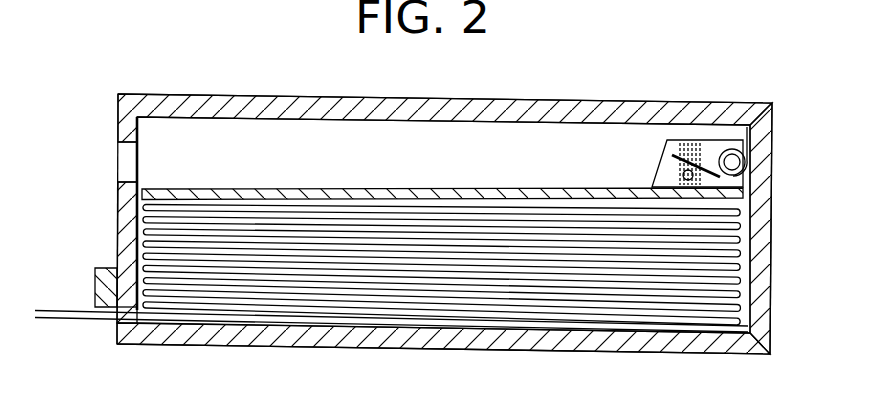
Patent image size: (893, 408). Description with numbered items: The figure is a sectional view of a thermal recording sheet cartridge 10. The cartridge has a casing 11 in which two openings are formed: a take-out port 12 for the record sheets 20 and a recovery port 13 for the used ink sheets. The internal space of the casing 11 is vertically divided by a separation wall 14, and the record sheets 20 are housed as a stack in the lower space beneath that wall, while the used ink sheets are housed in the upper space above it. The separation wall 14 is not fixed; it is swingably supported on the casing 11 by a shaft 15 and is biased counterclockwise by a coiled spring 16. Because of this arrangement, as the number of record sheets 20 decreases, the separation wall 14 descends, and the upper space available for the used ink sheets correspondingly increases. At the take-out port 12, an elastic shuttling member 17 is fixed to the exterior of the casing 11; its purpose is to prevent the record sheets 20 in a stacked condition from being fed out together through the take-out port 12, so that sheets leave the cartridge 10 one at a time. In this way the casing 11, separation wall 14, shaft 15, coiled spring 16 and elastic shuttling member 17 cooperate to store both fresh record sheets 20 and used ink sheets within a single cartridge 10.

The cartridge 10 is at (594, 91).
The casing 11 is at (397, 338).
The take-out port 12 is at (116, 321).
The recovery port 13 is at (118, 143).
The separation wall 14 is at (305, 188).
The shaft 15 is at (734, 168).
The coiled spring 16 is at (773, 134).
The elastic shuttling member 17 is at (95, 291).
The record sheets 20 is at (550, 293).